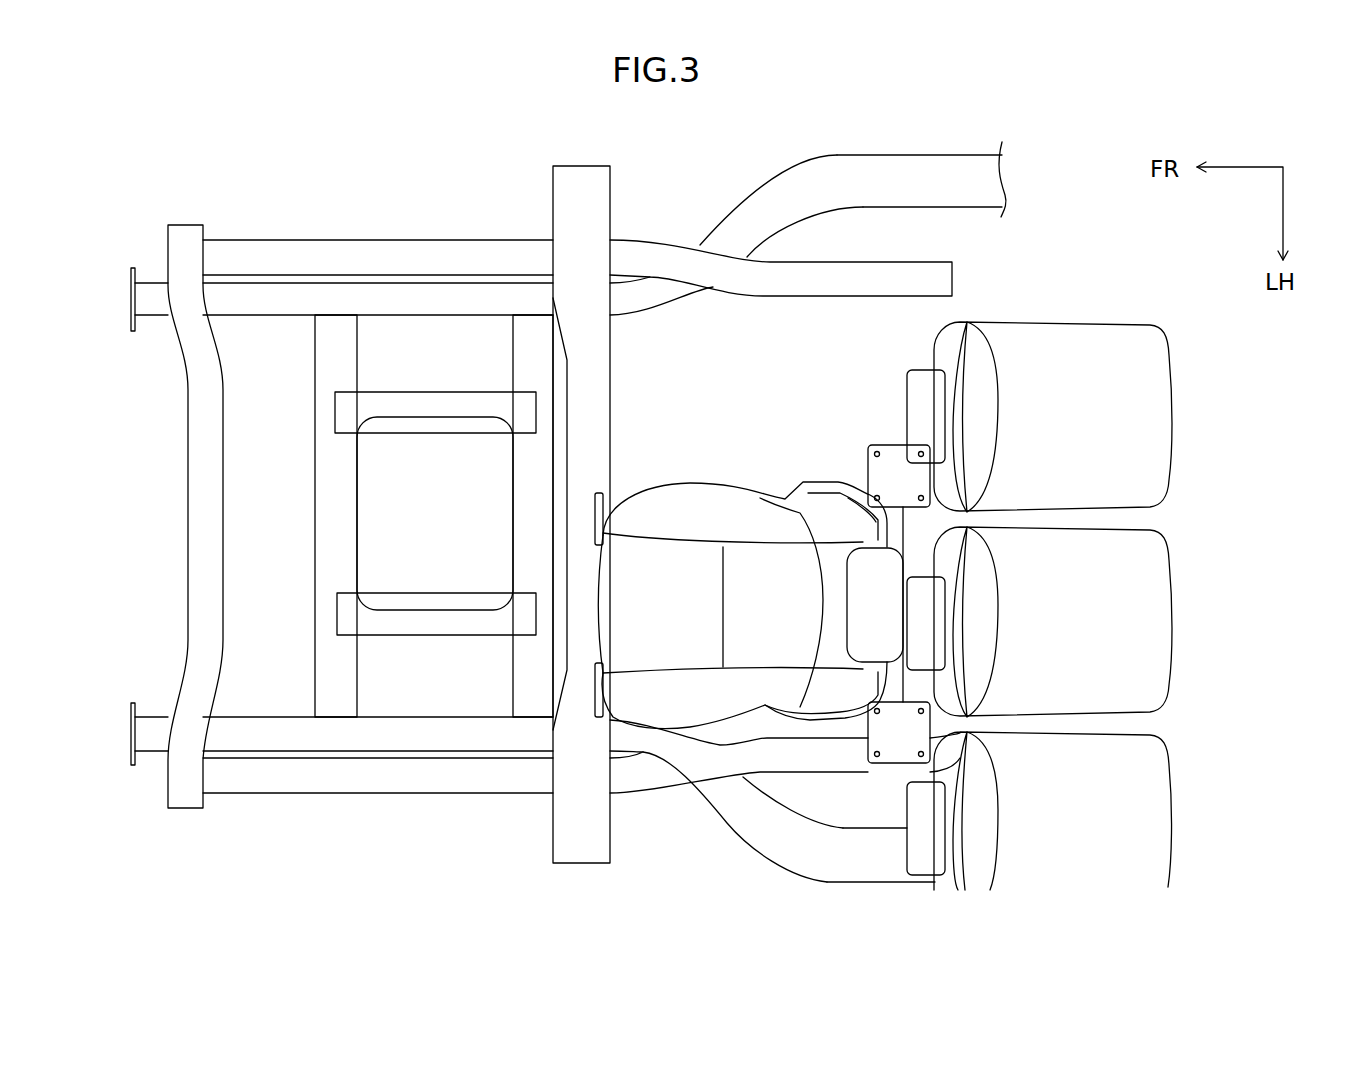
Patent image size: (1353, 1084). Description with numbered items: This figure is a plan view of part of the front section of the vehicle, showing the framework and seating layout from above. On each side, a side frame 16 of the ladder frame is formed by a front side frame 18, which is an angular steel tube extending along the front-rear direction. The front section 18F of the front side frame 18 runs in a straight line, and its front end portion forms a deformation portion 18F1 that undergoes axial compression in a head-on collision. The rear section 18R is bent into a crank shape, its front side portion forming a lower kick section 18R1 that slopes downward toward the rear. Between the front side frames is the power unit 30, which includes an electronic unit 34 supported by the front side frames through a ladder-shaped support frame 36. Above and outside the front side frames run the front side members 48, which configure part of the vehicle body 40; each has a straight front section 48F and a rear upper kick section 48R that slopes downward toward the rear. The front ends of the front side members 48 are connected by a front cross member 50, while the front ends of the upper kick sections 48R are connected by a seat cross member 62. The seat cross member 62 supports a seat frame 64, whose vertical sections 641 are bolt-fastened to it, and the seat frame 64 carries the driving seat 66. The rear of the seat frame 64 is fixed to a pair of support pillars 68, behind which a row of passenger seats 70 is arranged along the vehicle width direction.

The side frame 16 is at (980, 135).
The front side frame 18 is at (850, 152).
The front section of front side frame 18F is at (345, 292).
The deformation portion 18F1 is at (151, 283).
The rear section of front side frame 18R is at (913, 155).
The lower kick section 18R1 is at (747, 210).
The power unit 30 is at (391, 516).
The electronic unit 34 is at (357, 535).
The support frame 36 is at (315, 455).
The vehicle body 40 is at (253, 215).
The front side member 48 is at (512, 240).
The front section of front side member 48F is at (447, 240).
The upper kick section 48R is at (718, 260).
The front cross member 50 is at (188, 500).
The seat cross member 62 is at (610, 400).
The seat frame 64 is at (520, 596).
The vertical section 641 is at (595, 513).
The driving seat 66 is at (740, 488).
The support pillar 68 is at (932, 484).
The passenger seat 70 is at (1173, 422).